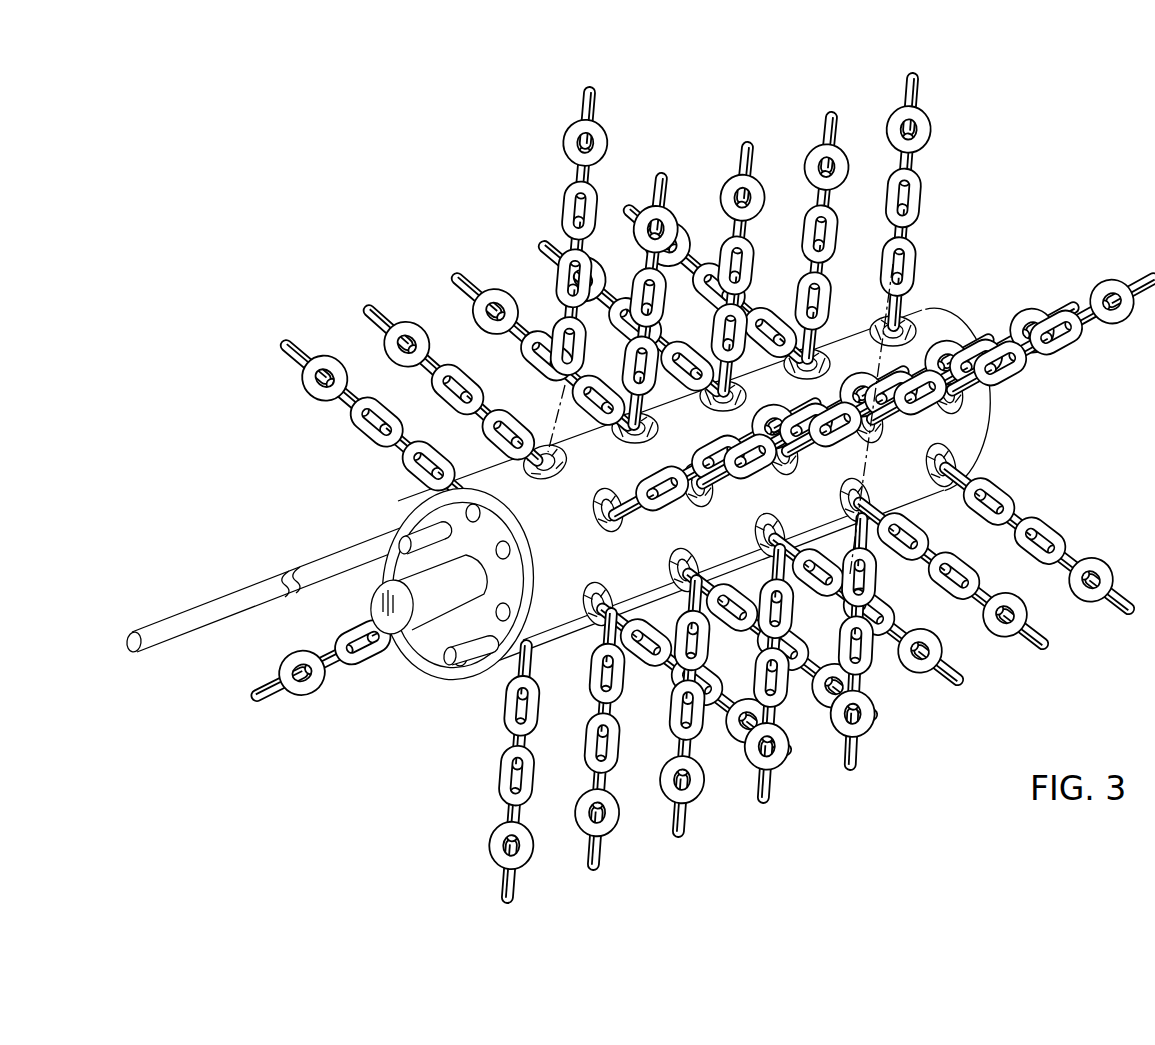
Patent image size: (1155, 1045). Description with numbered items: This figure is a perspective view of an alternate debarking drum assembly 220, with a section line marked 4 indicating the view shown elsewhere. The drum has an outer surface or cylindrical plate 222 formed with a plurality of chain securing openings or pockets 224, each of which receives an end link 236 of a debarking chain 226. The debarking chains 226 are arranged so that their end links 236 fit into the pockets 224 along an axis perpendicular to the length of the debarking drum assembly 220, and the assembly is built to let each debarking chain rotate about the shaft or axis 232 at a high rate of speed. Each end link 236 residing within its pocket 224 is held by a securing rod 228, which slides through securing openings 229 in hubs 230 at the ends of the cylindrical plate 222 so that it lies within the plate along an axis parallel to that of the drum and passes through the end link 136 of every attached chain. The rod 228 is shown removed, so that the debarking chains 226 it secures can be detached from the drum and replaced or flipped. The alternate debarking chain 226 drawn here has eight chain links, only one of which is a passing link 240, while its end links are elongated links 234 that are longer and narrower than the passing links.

The debarking drum assembly 220 is at (640, 471).
The cylindrical plate 222 is at (580, 582).
The chain securing pocket 224 is at (560, 450).
The debarking chain 226 is at (580, 207).
The securing rod 228 is at (233, 593).
The securing opening 229 is at (458, 517).
The hub 230 is at (488, 524).
The shaft or axis 232 is at (428, 648).
The elongated link 234 is at (594, 188).
The end link 236 is at (592, 83).
The passing link 240 is at (603, 133).
The end link 136 is at (567, 330).
The section line 4- 4 is at (893, 264).